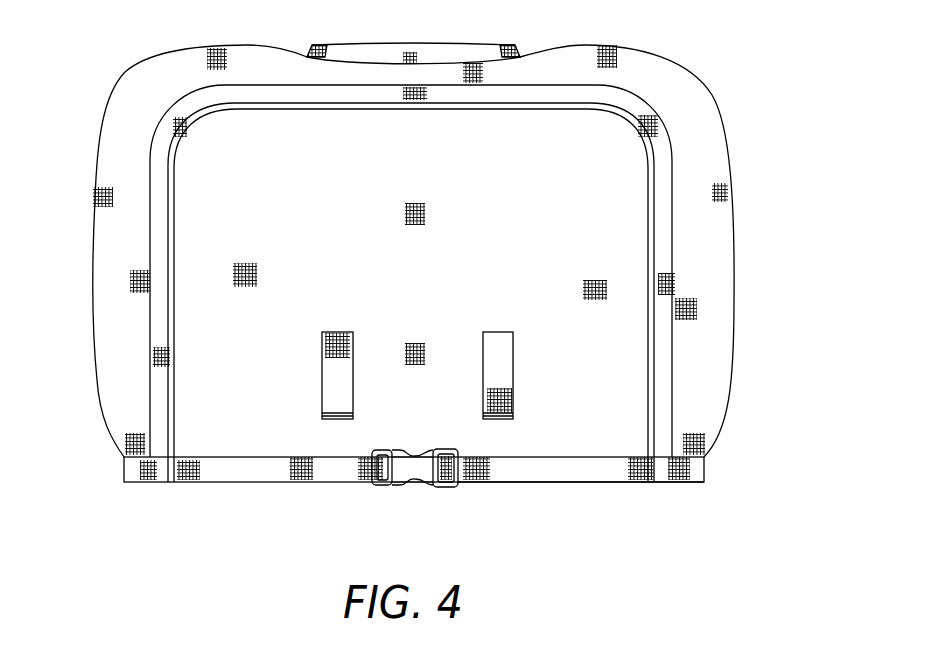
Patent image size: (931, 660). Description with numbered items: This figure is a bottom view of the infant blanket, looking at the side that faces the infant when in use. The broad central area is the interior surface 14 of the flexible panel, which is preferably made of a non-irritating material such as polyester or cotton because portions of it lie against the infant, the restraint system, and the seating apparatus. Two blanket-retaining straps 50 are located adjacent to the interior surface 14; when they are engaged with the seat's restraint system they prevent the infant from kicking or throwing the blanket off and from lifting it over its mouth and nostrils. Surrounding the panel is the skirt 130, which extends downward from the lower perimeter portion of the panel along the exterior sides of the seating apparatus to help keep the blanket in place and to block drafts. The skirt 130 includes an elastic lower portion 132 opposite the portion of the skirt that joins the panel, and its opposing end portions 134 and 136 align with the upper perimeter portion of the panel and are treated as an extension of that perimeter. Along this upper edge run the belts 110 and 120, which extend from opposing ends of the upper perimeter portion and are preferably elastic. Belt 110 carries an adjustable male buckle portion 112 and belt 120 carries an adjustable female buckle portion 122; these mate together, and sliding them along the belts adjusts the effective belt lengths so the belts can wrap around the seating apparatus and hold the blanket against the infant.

The skirt 130 is at (167, 77).
The interior surface 14 is at (613, 148).
The elastic lower portion 132 is at (665, 325).
The opposing end portion of skirt 134 is at (118, 436).
The opposing end portion of skirt 136 is at (707, 435).
The belt 120 is at (200, 483).
The belt 110 is at (514, 483).
The female buckle portion 122 is at (390, 487).
The male buckle portion 112 is at (453, 487).
The blanket-retaining strap 50 is at (330, 378).